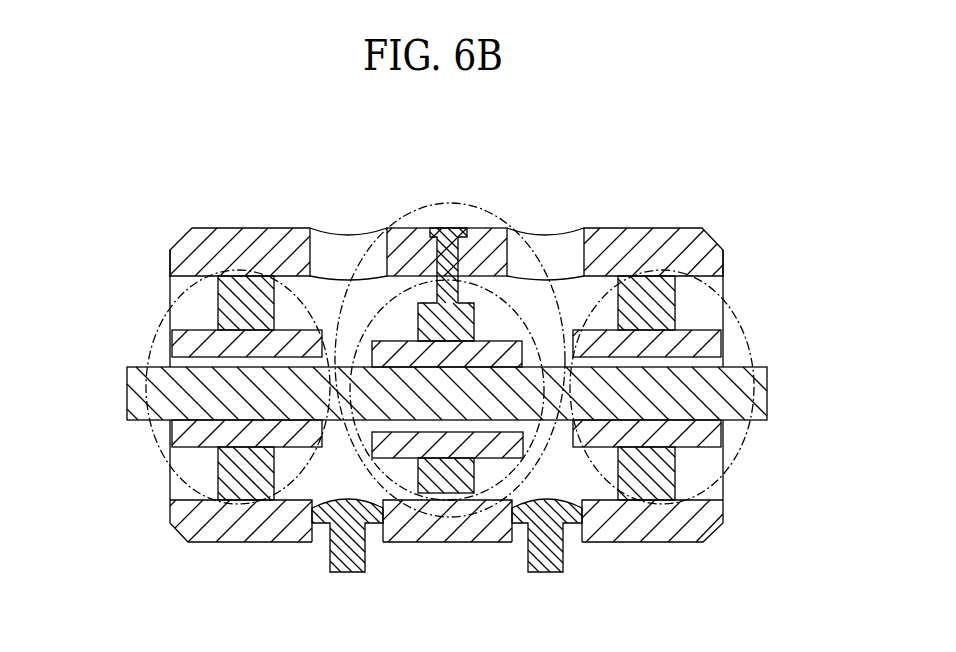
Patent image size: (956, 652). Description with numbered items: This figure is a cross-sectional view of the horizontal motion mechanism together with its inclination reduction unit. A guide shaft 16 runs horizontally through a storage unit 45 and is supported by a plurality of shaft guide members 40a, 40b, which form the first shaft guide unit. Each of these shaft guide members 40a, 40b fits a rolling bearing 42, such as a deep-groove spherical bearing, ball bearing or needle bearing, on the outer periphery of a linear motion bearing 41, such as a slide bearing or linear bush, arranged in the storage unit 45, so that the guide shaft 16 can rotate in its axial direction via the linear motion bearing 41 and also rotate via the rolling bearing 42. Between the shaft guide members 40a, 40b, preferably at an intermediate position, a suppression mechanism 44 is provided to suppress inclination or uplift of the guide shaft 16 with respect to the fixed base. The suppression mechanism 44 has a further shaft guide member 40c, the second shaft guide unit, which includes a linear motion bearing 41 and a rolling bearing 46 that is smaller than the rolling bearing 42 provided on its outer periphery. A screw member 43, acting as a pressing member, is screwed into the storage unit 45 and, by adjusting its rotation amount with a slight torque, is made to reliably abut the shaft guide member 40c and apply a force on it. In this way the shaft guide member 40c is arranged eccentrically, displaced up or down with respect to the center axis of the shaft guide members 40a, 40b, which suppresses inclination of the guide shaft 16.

The guide shaft 16 is at (136, 390).
The shaft guide member 40a is at (150, 333).
The shaft guide member 40b is at (737, 332).
The shaft guide member 40c is at (540, 277).
The linear motion bearing 41 is at (176, 436).
The rolling bearing 42 is at (218, 303).
The screw member 43 is at (448, 232).
The suppression mechanism 44 is at (408, 212).
The storage unit 45 is at (253, 236).
The rolling bearing 46 is at (484, 290).